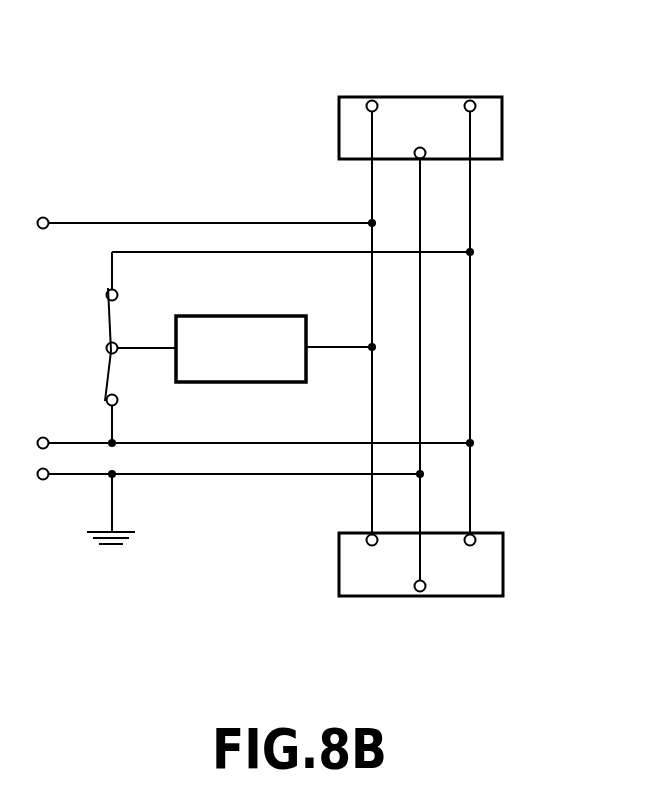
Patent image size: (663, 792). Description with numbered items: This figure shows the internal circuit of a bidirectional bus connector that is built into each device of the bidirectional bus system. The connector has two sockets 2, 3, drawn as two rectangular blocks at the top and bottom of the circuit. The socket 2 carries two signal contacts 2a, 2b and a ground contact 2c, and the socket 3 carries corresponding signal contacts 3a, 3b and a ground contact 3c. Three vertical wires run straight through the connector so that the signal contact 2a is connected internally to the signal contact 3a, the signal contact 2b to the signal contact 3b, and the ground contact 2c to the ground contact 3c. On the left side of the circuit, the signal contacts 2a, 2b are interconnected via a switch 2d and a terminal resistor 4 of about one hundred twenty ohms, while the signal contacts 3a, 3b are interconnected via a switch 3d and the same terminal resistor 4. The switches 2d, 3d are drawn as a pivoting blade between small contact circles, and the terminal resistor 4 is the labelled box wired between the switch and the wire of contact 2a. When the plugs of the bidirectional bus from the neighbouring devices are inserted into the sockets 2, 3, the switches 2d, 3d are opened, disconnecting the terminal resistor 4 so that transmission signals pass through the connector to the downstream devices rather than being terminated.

The socket 2 is at (503, 121).
The signal contact 2a is at (372, 99).
The signal contact 2b is at (470, 99).
The ground contact 2c is at (420, 147).
The switch 2d is at (105, 306).
The socket 3 is at (504, 553).
The signal contact 3a is at (371, 546).
The signal contact 3b is at (471, 546).
The ground contact 3c is at (420, 592).
The switch 3d is at (108, 370).
The terminal resistor 4 is at (272, 322).